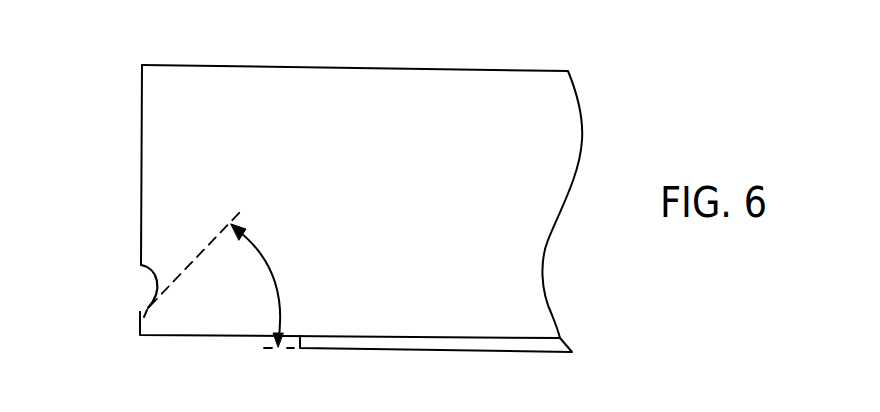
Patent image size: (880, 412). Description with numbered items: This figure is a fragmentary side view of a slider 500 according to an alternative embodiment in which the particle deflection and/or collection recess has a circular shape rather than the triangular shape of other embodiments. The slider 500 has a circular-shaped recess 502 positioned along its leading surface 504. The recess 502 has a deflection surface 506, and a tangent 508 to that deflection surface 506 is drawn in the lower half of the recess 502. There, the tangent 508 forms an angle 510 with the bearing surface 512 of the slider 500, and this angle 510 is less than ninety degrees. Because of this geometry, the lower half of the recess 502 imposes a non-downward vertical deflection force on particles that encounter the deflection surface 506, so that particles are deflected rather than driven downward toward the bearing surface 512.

The slider 500 is at (529, 66).
The circular-shaped recess 502 is at (134, 282).
The leading surface 504 is at (143, 98).
The deflection surface 506 is at (148, 308).
The tangent 508 is at (243, 206).
The angle 510 is at (273, 277).
The bearing surface 512 is at (490, 352).